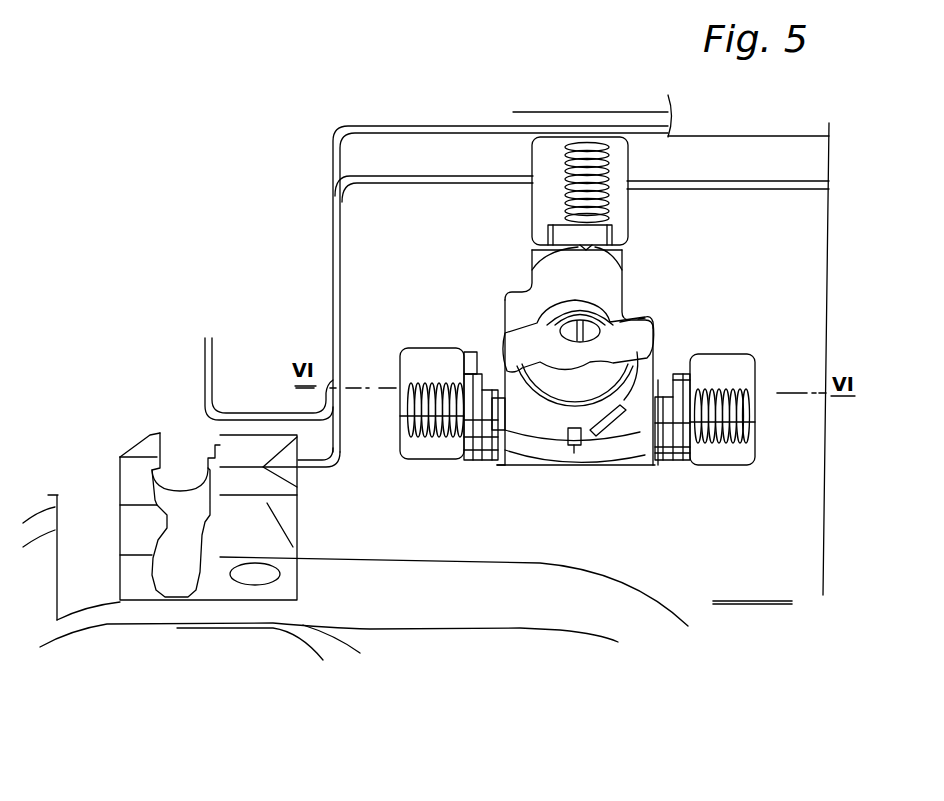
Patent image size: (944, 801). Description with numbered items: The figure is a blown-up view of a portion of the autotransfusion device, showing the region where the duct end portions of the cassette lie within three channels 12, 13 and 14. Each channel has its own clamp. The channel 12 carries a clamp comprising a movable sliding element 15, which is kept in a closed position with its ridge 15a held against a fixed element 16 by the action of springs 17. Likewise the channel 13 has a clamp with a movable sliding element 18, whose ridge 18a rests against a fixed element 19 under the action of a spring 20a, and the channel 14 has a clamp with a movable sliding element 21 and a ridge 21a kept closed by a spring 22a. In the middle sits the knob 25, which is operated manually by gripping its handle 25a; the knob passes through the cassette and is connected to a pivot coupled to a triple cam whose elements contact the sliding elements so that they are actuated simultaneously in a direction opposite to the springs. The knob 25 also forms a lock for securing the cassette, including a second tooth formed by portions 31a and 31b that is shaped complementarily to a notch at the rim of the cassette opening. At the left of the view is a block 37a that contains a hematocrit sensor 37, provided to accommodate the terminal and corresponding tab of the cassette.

The channel 12 is at (686, 377).
The channel 13 is at (492, 383).
The channel 14 is at (540, 233).
The movable sliding element 15 is at (753, 360).
The ridge 15a is at (667, 453).
The fixed element 16 is at (647, 440).
The springs 17 is at (720, 462).
The movable sliding element 18 is at (466, 352).
The ridge 18a is at (468, 462).
The fixed element 19 is at (477, 455).
The spring 20a is at (430, 432).
The movable sliding element 21 is at (622, 262).
The ridge 21a is at (533, 268).
The spring 22a is at (565, 172).
The knob 25 is at (665, 380).
The handle 25a is at (648, 337).
The second tooth portion 31a is at (617, 468).
The second tooth portion 31b is at (563, 456).
The hematocrit sensor 37 is at (247, 581).
The block 37a is at (178, 495).